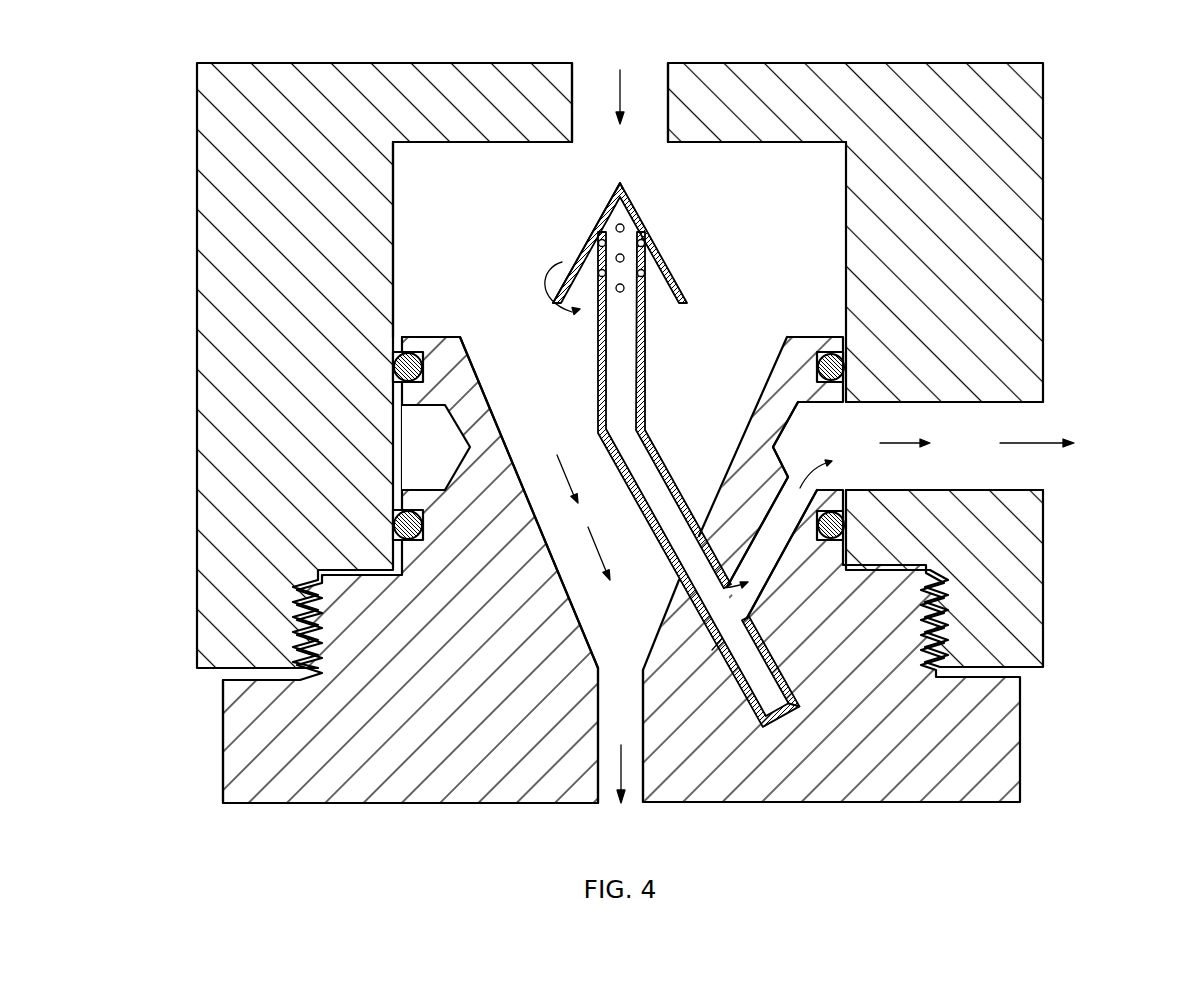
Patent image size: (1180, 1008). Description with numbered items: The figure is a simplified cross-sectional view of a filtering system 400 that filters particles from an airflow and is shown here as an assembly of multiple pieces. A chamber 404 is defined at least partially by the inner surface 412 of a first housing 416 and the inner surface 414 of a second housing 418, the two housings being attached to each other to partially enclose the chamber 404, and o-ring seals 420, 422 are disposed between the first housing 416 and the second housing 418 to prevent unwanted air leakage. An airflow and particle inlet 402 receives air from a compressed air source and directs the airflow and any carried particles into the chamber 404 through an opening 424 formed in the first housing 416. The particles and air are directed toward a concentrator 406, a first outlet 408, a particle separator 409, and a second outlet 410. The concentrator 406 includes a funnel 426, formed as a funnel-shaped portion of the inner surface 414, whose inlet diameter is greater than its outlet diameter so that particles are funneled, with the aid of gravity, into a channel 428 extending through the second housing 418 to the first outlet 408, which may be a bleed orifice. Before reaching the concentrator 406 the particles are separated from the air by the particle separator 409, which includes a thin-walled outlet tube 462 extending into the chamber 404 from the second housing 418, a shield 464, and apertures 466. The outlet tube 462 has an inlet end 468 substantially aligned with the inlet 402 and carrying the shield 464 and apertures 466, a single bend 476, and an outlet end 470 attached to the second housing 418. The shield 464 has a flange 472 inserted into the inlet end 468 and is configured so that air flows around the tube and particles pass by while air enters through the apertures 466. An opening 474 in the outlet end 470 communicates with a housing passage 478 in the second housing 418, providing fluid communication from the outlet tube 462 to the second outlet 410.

The filtering system 400 is at (1075, 137).
The airflow and particle inlet 402 is at (643, 73).
The chamber 404 is at (443, 219).
The concentrator 406 is at (740, 400).
The first outlet 408 is at (632, 815).
The particle separator 409 is at (682, 448).
The second outlet 410 is at (889, 402).
The inner surface of first housing 412 is at (394, 273).
The inner surface of second housing 414 is at (458, 337).
The first housing 416 is at (197, 349).
The second housing 418 is at (228, 732).
The o-ring seal 420 is at (396, 366).
The o-ring seal 422 is at (396, 527).
The opening 424 is at (622, 137).
The funnel 426 is at (484, 395).
The channel 428 is at (620, 737).
The outlet tube 462 is at (682, 479).
The shield 464 is at (648, 242).
The aperture 466 is at (634, 243).
The inlet end 468 is at (608, 216).
The outlet end 470 is at (755, 654).
The flange 472 is at (623, 202).
The opening 474 is at (722, 647).
The bend 476 is at (608, 436).
The housing passage 478 is at (777, 548).